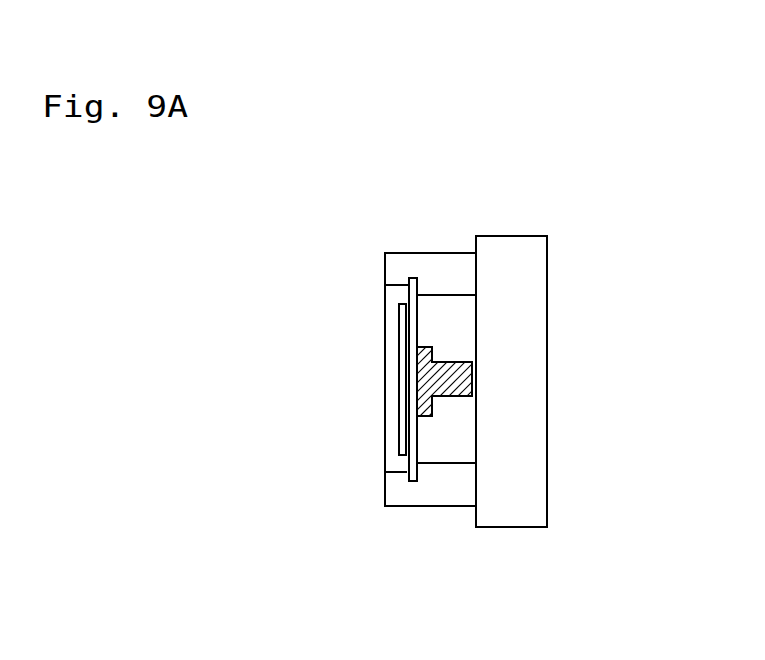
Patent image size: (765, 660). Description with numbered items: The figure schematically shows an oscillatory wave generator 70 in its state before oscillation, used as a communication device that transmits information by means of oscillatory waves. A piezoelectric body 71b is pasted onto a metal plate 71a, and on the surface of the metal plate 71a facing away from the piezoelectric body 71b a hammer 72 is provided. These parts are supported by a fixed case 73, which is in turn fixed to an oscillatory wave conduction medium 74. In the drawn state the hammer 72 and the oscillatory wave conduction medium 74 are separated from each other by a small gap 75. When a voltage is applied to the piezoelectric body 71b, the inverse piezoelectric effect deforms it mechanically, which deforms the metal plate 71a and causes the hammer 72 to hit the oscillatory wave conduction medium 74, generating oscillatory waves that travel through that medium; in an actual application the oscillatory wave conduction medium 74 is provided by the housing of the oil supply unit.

The oscillatory wave generator 70 is at (428, 239).
The metal plate 71a is at (415, 300).
The piezoelectric body 71b is at (403, 350).
The hammer 72 is at (445, 383).
The fixed case 73 is at (452, 492).
The oscillatory wave conduction medium 74 is at (520, 499).
The small gap 75 is at (472, 374).